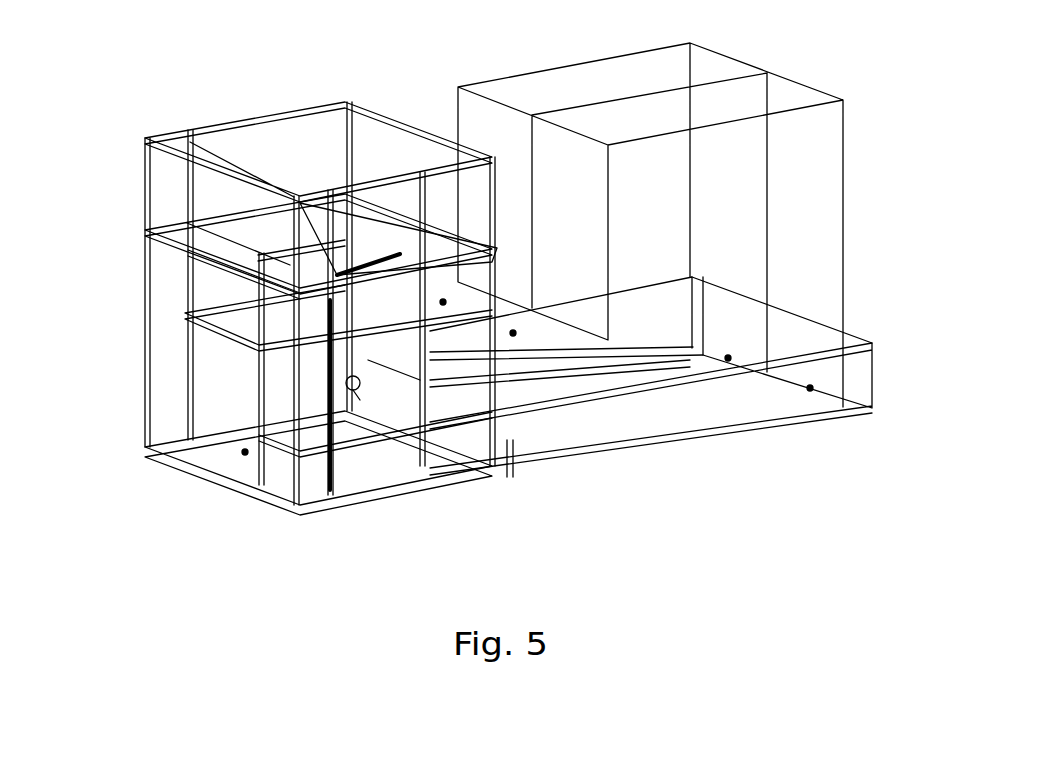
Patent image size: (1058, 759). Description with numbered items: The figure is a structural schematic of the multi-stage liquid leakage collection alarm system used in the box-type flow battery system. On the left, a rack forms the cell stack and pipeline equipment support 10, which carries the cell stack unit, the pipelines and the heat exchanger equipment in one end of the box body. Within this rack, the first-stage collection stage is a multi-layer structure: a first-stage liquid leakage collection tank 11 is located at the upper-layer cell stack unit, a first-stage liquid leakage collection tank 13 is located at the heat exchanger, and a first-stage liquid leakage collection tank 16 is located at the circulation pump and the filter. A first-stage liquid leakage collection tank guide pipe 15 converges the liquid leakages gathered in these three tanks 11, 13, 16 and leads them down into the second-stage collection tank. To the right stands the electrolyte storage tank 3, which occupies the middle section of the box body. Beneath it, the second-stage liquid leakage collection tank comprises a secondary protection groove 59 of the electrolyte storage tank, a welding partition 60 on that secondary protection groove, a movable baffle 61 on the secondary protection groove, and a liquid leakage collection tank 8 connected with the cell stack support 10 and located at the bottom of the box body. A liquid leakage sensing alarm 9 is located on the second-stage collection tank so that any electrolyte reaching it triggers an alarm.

The electrolyte storage tank 3 is at (795, 262).
The second-stage liquid leakage collection tank 8 is at (150, 450).
The liquid leakage sensing alarm 9 is at (262, 490).
The cell stack and pipeline equipment support 10 is at (145, 194).
The first-stage liquid leakage collection tank at upper-layer cell stack unit 11 is at (262, 322).
The first-stage liquid leakage collection tank at heat exchanger 13 is at (365, 218).
The first-stage liquid leakage collection tank guide pipe 15 is at (356, 392).
The first-stage liquid leakage collection tank at circulation pump and filter 16 is at (573, 347).
The secondary protection groove of electrolyte storage tank 59 is at (857, 384).
The welding partition on secondary protection groove 60 is at (512, 478).
The movable baffle on the secondary protection tank 61 is at (820, 322).